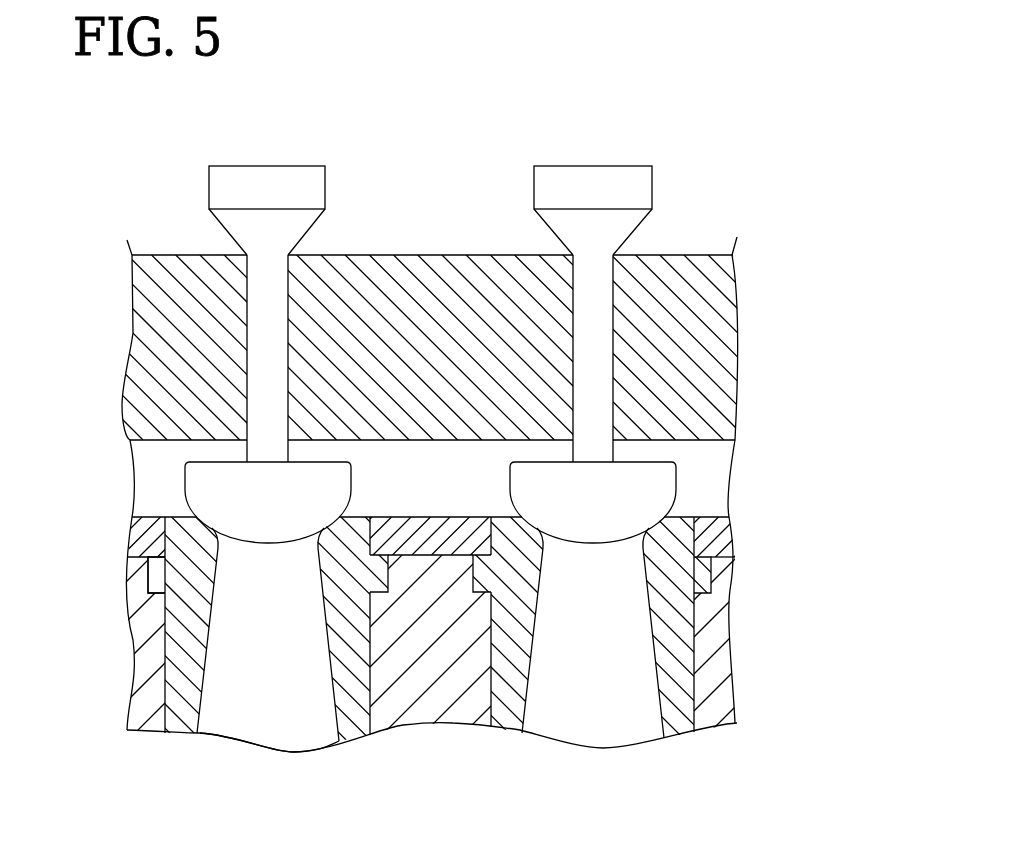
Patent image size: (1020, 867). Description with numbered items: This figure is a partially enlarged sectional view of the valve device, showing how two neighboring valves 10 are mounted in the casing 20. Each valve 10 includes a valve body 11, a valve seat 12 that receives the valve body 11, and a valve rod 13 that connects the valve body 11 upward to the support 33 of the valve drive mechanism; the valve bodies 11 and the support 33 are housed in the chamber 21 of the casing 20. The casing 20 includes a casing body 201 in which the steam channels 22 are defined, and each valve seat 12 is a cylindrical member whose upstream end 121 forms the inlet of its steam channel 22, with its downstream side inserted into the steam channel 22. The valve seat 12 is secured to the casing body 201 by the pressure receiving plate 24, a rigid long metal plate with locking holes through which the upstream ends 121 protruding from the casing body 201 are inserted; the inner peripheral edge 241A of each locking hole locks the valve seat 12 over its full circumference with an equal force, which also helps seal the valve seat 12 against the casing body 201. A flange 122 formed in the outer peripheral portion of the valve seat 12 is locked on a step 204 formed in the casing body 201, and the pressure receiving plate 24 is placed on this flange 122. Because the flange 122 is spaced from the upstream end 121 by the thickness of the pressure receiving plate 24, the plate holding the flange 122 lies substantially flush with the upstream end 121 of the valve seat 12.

The valve 10 is at (436, 439).
The valve body 11 is at (185, 481).
The valve seat 12 is at (500, 405).
The valve rod 13 is at (247, 360).
The upstream end 121 is at (360, 517).
The flange 122 is at (380, 582).
The casing 20 is at (381, 469).
The casing body 201 is at (427, 712).
The step 204 is at (150, 576).
The chamber 21 is at (461, 76).
The steam channel 22 is at (250, 712).
The pressure receiving plate 24 is at (458, 517).
The inner peripheral edge 241A is at (176, 530).
The support 33 is at (689, 255).